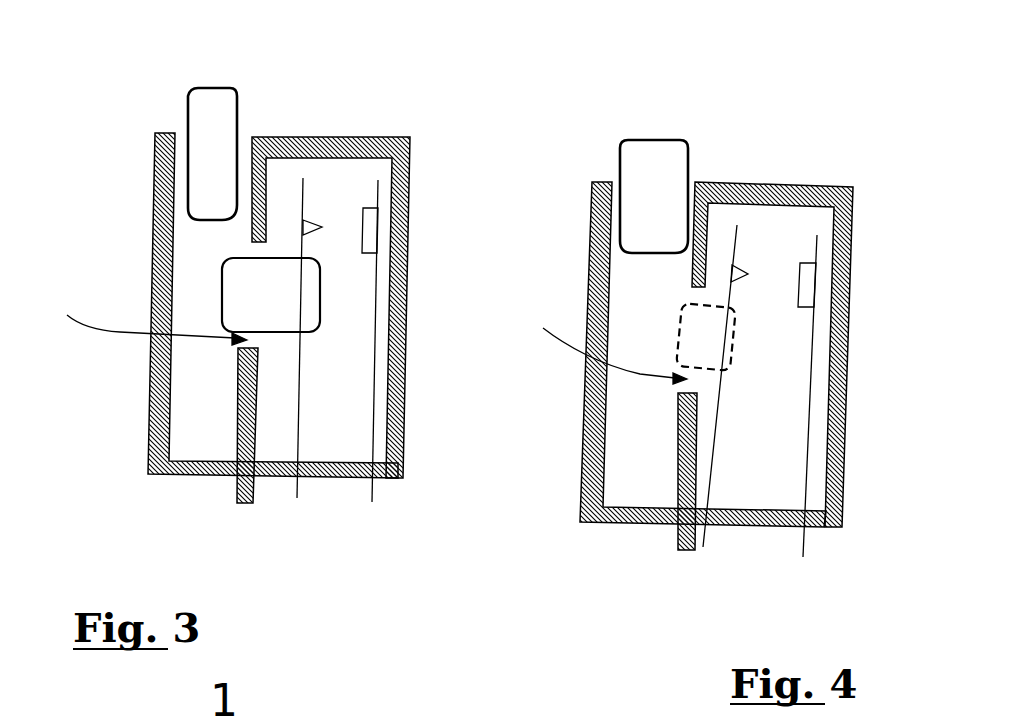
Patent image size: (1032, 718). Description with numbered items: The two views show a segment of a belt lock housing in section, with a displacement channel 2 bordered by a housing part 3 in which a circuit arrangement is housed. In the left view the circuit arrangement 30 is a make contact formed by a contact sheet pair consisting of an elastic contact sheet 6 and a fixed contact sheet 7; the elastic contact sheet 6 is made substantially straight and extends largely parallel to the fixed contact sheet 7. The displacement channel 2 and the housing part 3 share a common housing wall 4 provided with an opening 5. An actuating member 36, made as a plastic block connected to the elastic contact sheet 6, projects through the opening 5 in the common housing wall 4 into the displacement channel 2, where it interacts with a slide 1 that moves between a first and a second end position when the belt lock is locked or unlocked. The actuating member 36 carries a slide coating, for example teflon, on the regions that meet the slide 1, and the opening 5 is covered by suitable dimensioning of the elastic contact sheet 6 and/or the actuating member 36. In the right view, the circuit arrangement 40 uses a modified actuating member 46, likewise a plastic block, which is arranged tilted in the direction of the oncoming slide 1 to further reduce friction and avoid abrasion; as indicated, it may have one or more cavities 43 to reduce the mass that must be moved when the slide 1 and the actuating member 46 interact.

In FIG. 3, the slide 1 is at (188, 112).
In FIG. 4, the slide 1 is at (638, 163).
In FIG. 3, the displacement channel 2 is at (178, 428).
In FIG. 4, the displacement channel 2 is at (613, 486).
In FIG. 3, the housing part 3 is at (277, 450).
In FIG. 4, the housing part 3 is at (745, 493).
In FIG. 3, the common housing wall 4 is at (255, 467).
In FIG. 4, the common housing wall 4 is at (687, 488).
In FIG. 3, the opening 5 is at (142, 309).
In FIG. 4, the opening 5 is at (592, 345).
In FIG. 3, the elastic contact sheet 6 is at (303, 247).
In FIG. 4, the elastic contact sheet 6 is at (723, 287).
In FIG. 3, the fixed contact sheet 7 is at (370, 427).
In FIG. 4, the fixed contact sheet 7 is at (808, 487).
In FIG. 3, the circuit arrangement 30 is at (433, 124).
In FIG. 3, the actuating member 36 is at (222, 283).
In FIG. 4, the circuit arrangement 40 is at (835, 140).
In FIG. 4, the cavity 43 is at (703, 341).
In FIG. 4, the actuating member 46 is at (693, 302).